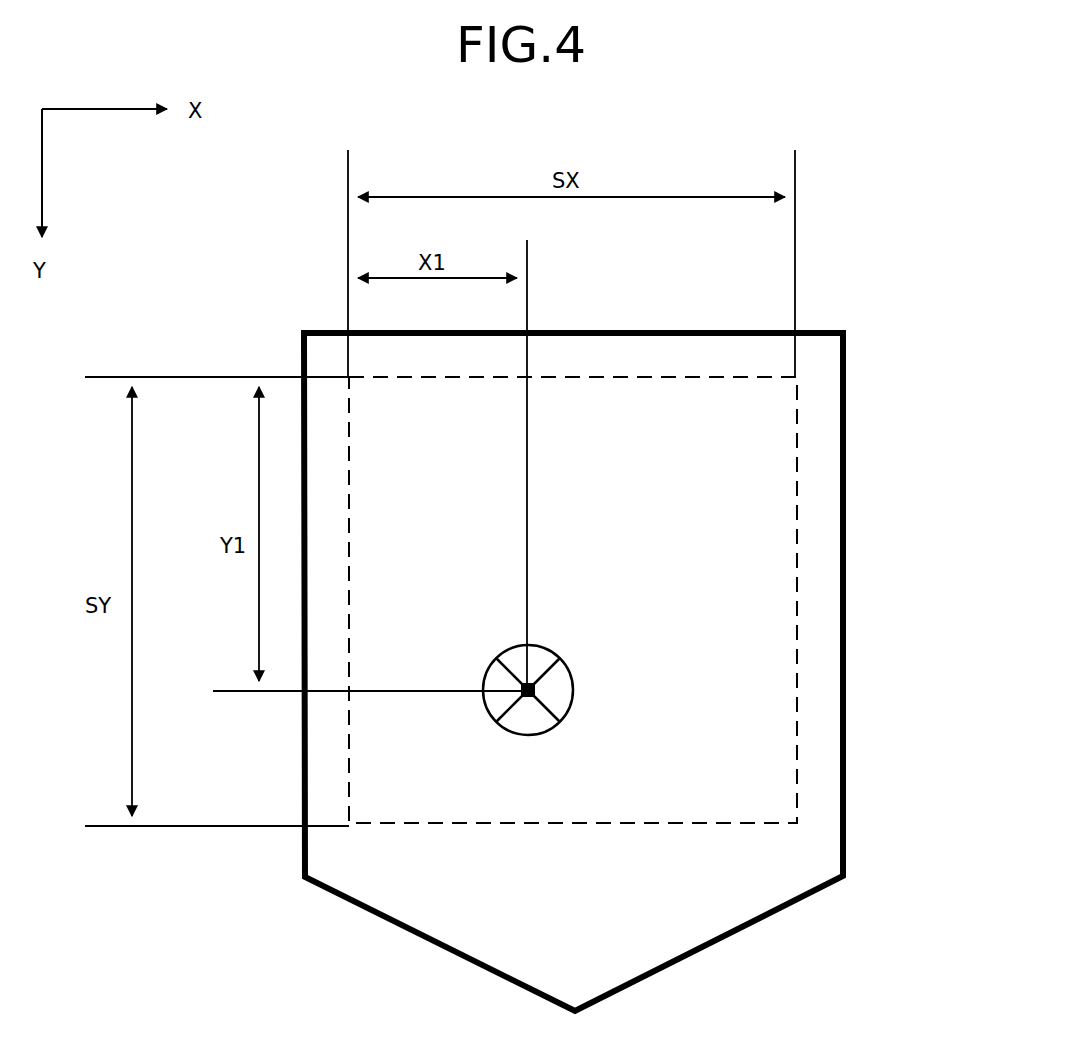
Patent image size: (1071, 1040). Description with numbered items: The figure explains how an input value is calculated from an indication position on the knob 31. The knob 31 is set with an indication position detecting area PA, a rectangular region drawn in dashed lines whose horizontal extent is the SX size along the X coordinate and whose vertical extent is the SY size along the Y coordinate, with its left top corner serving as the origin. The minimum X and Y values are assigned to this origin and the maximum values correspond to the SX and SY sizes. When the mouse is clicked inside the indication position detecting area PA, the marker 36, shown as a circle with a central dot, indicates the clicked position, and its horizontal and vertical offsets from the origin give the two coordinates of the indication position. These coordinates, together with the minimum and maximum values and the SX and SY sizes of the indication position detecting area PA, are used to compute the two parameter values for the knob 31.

The knob 31 is at (845, 353).
The marker 36 is at (553, 650).
The indication position detecting area PA is at (797, 518).